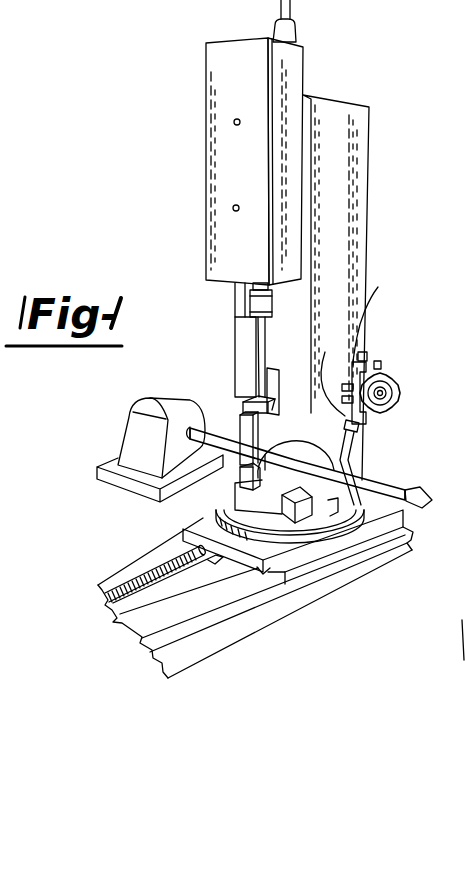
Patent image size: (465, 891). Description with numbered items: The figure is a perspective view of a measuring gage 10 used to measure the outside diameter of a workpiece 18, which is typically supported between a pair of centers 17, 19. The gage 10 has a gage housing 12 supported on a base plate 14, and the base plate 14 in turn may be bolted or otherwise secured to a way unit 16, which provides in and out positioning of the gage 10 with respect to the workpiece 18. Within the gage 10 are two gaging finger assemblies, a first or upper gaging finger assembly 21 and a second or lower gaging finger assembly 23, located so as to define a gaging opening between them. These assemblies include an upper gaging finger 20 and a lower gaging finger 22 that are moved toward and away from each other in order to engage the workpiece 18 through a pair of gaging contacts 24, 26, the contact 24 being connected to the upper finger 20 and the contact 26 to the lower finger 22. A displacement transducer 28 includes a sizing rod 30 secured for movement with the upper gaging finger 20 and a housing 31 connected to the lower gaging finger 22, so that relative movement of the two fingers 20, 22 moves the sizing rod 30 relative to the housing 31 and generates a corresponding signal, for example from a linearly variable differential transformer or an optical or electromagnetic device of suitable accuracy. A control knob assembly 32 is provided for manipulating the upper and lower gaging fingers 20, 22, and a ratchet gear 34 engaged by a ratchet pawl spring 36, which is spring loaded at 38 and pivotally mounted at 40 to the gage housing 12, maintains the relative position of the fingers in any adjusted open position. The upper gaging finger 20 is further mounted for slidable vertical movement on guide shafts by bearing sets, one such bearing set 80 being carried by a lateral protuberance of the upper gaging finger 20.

The measuring gage 10 is at (377, 228).
The gage housing 12 is at (372, 135).
The base plate 14 is at (298, 528).
The way unit 16 is at (292, 571).
The center 17 is at (132, 427).
The workpiece 18 is at (377, 486).
The center 19 is at (428, 500).
The upper gaging finger 20 is at (233, 421).
The upper gaging finger assembly 21 is at (222, 418).
The lower gaging finger 22 is at (262, 488).
The lower gaging finger assembly 23 is at (200, 556).
The gaging contact 24 is at (282, 411).
The gaging contact 26 is at (226, 494).
The displacement transducer 28 is at (203, 207).
The sizing rod 30 is at (235, 323).
The housing 31 is at (204, 99).
The control knob assembly 32 is at (380, 364).
The ratchet gear 34 is at (383, 283).
The ratchet pawl spring 36 is at (370, 436).
The spring loading point 38 is at (356, 508).
The pivot mount 40 is at (327, 349).
The bearing set 80 is at (463, 640).